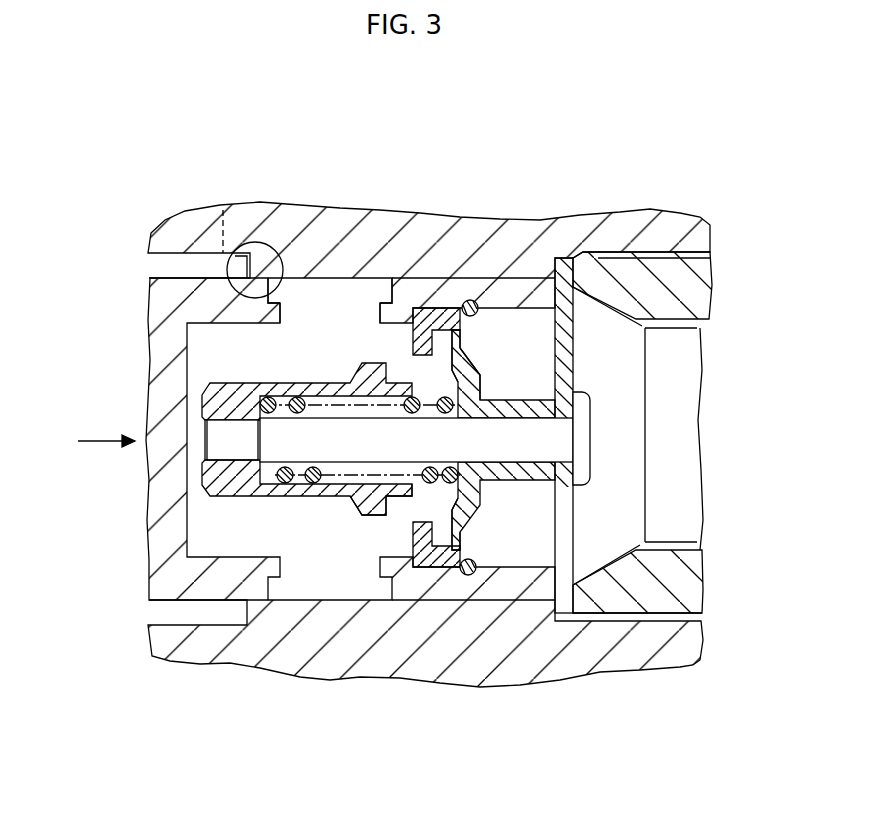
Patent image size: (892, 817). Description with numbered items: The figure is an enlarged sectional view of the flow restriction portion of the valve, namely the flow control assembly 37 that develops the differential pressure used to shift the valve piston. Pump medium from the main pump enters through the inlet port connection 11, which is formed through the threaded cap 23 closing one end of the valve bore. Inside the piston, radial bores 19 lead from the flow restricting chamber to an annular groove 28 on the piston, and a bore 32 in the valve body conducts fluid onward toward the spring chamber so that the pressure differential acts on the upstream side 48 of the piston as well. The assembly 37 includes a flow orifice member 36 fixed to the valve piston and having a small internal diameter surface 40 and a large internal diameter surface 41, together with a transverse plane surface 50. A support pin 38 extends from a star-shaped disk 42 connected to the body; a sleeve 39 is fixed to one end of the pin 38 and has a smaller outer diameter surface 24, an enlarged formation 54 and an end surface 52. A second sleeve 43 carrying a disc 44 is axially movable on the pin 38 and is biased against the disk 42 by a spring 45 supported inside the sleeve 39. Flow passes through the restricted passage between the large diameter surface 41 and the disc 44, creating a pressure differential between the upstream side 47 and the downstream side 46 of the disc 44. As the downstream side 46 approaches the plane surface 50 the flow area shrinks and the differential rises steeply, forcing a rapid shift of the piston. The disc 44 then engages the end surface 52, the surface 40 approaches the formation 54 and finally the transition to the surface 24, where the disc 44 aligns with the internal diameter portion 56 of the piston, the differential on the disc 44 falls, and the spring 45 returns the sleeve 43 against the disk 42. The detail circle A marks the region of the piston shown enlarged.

The detail circle A is at (254, 242).
The inlet port connection 11 is at (673, 339).
The radial bores 19 is at (337, 313).
The threaded cap 23 is at (651, 290).
The outer diameter surface 24 is at (275, 490).
The annular groove 28 is at (325, 300).
The bore 32 is at (298, 255).
The flow orifice member 36 is at (465, 576).
The flow control assembly 37 is at (90, 441).
The support pin 38 is at (528, 438).
The sleeve 39 is at (230, 481).
The small internal diameter surface 40 is at (424, 530).
The large internal diameter surface 41 is at (462, 537).
The star-shaped disk 42 is at (564, 340).
The sleeve 43 is at (516, 400).
The disc 44 is at (459, 338).
The spring 45 is at (311, 483).
The downstream side 46 is at (469, 300).
The upstream side 47 is at (476, 361).
The upstream side 48 is at (565, 582).
The transverse plane surface 50 is at (433, 352).
The end surface 52 is at (421, 489).
The formation 54 is at (379, 513).
The internal diameter portion 56 is at (518, 540).